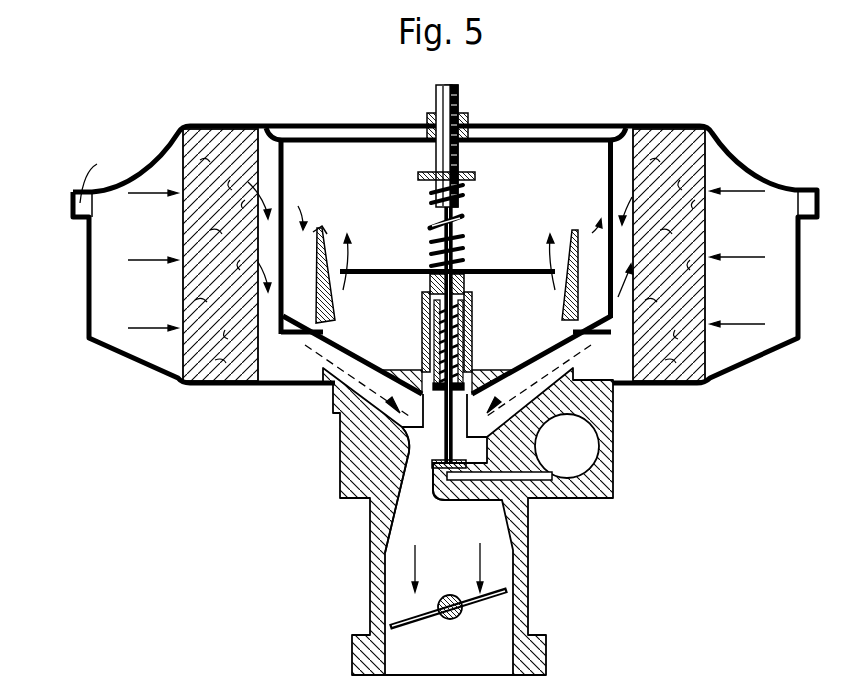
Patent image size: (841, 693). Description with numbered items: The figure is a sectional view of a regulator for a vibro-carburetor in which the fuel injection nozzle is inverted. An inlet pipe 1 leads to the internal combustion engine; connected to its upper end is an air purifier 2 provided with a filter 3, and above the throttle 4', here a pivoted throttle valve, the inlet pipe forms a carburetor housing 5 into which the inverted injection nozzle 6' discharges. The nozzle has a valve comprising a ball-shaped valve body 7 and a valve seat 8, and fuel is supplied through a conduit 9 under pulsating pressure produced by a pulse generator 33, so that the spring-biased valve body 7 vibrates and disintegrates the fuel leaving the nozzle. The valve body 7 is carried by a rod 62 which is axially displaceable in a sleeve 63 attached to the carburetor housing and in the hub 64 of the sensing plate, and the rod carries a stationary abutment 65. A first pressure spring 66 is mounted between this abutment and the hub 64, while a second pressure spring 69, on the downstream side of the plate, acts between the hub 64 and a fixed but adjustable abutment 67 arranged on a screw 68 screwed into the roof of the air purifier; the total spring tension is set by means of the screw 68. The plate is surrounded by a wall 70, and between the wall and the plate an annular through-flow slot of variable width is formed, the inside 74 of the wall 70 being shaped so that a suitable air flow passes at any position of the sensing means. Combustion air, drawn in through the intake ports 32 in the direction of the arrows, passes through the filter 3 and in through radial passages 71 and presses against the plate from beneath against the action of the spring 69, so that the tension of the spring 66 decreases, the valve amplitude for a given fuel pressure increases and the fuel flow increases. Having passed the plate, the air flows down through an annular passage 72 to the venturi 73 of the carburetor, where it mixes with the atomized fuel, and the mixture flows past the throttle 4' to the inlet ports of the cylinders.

The inlet pipe 1 is at (378, 600).
The air purifier 2 is at (128, 358).
The filter 3 is at (206, 384).
The throttle 4' is at (449, 614).
The carburetor housing 5 is at (358, 451).
The inverted injection nozzle 6' is at (427, 484).
The valve body 7 is at (457, 447).
The valve seat 8 is at (438, 459).
The conduit 9 is at (556, 482).
The intake ports 32 is at (808, 200).
The pulse generator 33 is at (588, 450).
The rod 62 is at (472, 328).
The sleeve 63 is at (422, 408).
The hub 64 is at (465, 284).
The stationary abutment 65 is at (464, 372).
The first pressure spring 66 is at (463, 304).
The adjustable abutment 67 is at (470, 178).
The screw 68 is at (459, 94).
The second pressure spring 69 is at (463, 222).
The wall 70 is at (322, 236).
The radial passages 71 is at (308, 346).
The annular passage 72 is at (302, 233).
The venturi 73 is at (375, 506).
The inside of the wall 74 is at (336, 300).